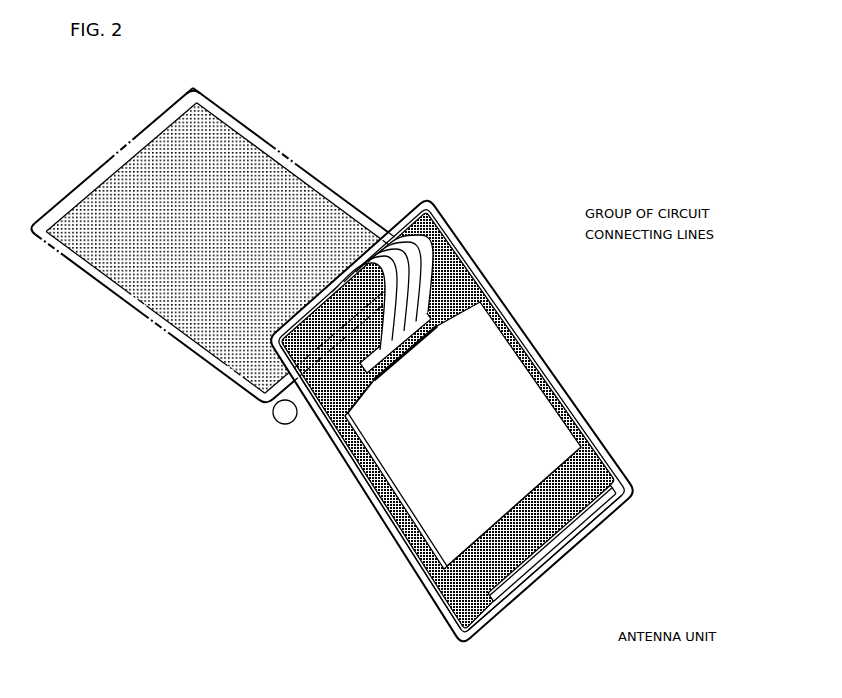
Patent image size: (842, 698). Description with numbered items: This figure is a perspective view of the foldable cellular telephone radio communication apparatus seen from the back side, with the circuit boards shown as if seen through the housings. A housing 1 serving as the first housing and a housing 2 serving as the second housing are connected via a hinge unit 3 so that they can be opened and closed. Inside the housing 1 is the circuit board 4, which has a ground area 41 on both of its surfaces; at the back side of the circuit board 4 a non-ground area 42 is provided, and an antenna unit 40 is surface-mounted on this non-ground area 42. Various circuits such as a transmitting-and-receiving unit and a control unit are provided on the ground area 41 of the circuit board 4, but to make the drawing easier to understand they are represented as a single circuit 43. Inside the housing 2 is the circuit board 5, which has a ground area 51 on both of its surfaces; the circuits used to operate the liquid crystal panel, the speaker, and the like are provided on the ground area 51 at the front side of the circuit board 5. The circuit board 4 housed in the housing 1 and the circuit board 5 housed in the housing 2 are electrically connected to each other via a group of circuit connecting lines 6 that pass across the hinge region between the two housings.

The housing 1 is at (590, 422).
The housing 2 is at (236, 111).
The hinge unit 3 is at (273, 418).
The circuit board 4 is at (548, 378).
The circuit board 5 is at (292, 160).
The ground area 51 is at (318, 207).
The group of circuit connecting lines 6 is at (403, 270).
The antenna unit 40 is at (522, 567).
The ground area 41 is at (353, 454).
The non-ground area 42 is at (457, 611).
The circuit 43 is at (423, 485).